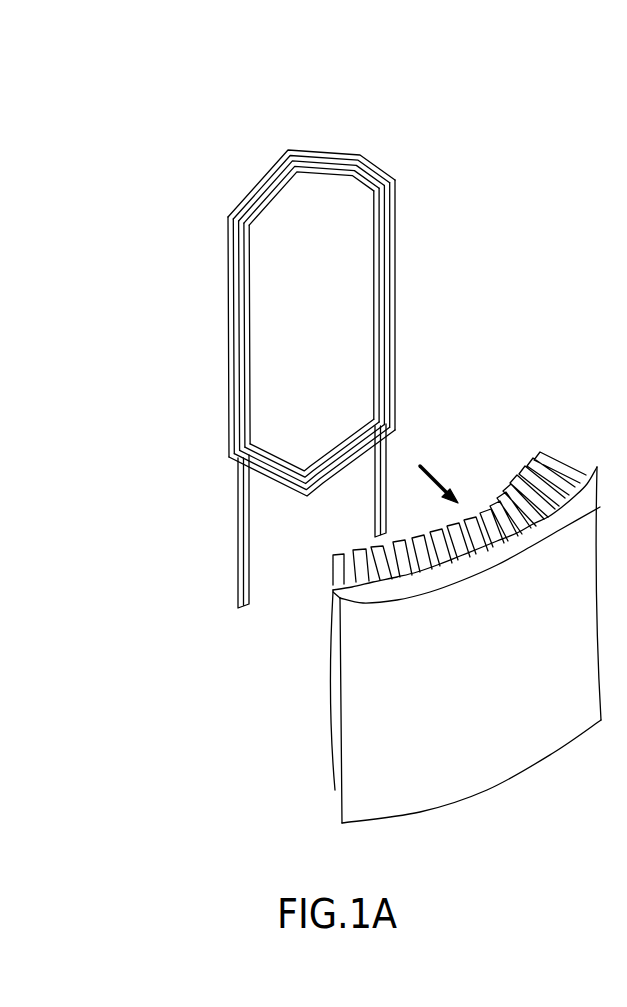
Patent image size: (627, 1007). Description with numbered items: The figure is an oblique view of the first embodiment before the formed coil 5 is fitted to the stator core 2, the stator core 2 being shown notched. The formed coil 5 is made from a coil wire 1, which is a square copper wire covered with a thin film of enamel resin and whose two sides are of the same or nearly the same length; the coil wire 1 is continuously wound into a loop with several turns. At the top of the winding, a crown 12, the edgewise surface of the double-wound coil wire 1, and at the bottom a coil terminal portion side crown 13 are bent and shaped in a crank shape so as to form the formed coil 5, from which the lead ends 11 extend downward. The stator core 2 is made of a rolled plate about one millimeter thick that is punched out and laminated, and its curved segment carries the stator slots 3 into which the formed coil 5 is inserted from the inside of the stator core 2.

The formed coil 5 is at (352, 127).
The coil wire 1 is at (395, 272).
The crown 12 is at (288, 150).
The coil terminal portion side crown 13 is at (317, 505).
The lead wire 11 is at (238, 583).
The stator core 2 is at (367, 757).
The stator slot 3 is at (492, 507).